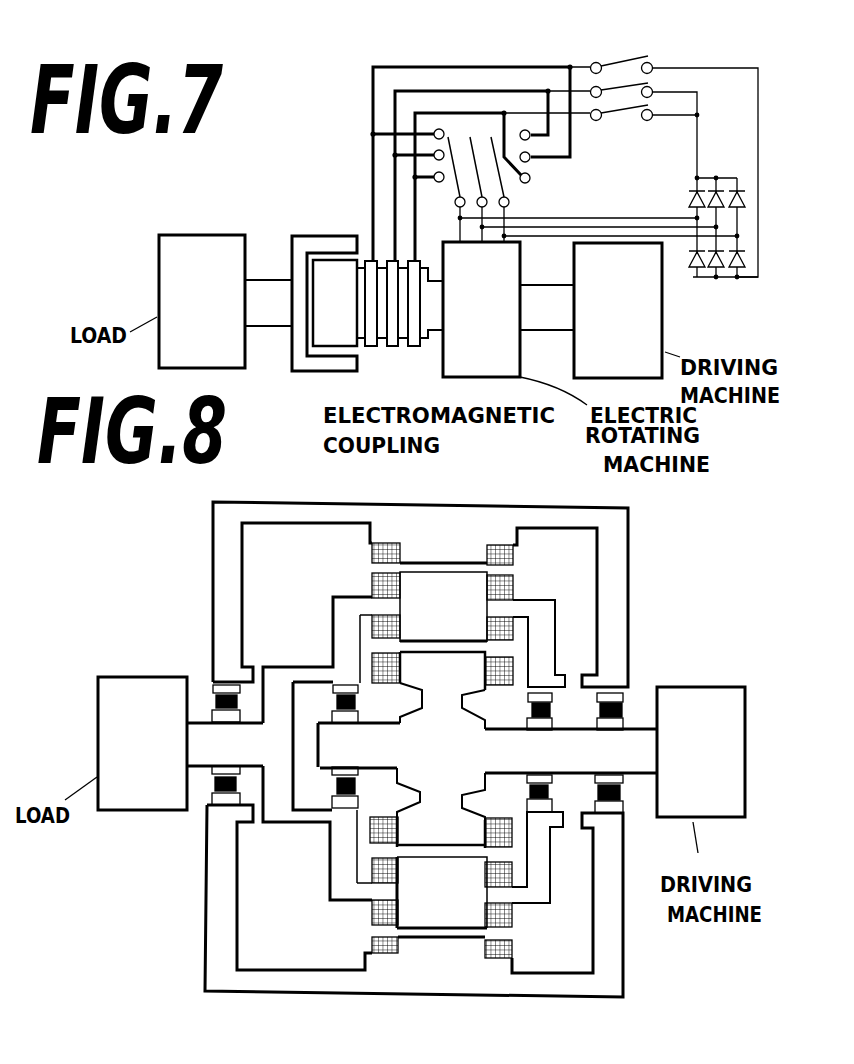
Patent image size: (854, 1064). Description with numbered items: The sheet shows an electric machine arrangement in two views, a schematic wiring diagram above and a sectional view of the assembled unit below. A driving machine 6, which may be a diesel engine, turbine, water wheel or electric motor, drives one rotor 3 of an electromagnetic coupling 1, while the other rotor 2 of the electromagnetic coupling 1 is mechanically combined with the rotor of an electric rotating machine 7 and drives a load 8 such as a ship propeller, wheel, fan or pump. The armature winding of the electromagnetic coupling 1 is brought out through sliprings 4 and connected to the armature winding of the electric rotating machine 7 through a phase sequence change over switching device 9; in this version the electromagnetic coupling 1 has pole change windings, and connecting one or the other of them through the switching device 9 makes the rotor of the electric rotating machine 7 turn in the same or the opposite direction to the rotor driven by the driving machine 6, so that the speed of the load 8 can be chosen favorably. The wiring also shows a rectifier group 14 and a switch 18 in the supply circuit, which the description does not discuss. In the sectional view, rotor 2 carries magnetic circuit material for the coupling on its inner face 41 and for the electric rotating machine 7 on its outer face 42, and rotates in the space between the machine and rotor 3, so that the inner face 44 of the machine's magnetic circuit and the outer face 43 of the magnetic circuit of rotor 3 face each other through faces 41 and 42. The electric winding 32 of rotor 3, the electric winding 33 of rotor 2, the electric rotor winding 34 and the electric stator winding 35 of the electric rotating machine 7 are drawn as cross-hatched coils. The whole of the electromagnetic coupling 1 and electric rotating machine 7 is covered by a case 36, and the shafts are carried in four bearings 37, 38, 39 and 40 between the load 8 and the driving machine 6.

In FIG. 7, the electromagnetic coupling 1 is at (378, 331).
In FIG. 8, the electromagnetic coupling 1 is at (455, 815).
In FIG. 7, the rotor 2 is at (318, 372).
In FIG. 8, the rotor 2 is at (323, 828).
In FIG. 7, the rotor 3 is at (421, 347).
In FIG. 8, the rotor 3 is at (578, 775).
In FIG. 7, the sliprings 4 is at (417, 260).
In FIG. 7, the driving machine 6 is at (618, 310).
In FIG. 8, the driving machine 6 is at (701, 752).
In FIG. 7, the electric rotating machine 7 is at (481, 309).
In FIG. 8, the electric rotating machine 7 is at (542, 770).
In FIG. 7, the load 8 is at (202, 301).
In FIG. 8, the load 8 is at (142, 743).
In FIG. 7, the phase sequence change over switching device 9 is at (585, 185).
In FIG. 7, the rectifier bridge 14 is at (723, 244).
In FIG. 7, the power supply switch 18 is at (675, 166).
In FIG. 8, the electric winding 32 is at (372, 817).
In FIG. 8, the electric winding 33 is at (372, 665).
In FIG. 8, the electric rotor winding 34 is at (372, 912).
In FIG. 8, the electric stator winding 35 is at (372, 942).
In FIG. 8, the case 36 is at (623, 980).
In FIG. 8, the bearing 37 is at (333, 687).
In FIG. 8, the bearing 38 is at (556, 751).
In FIG. 8, the bearing 39 is at (627, 693).
In FIG. 8, the bearing 40 is at (211, 686).
In FIG. 8, the inner face 41 is at (442, 628).
In FIG. 8, the outer face 42 is at (442, 607).
In FIG. 8, the outer face 43 is at (456, 671).
In FIG. 8, the inner face 44 is at (442, 552).